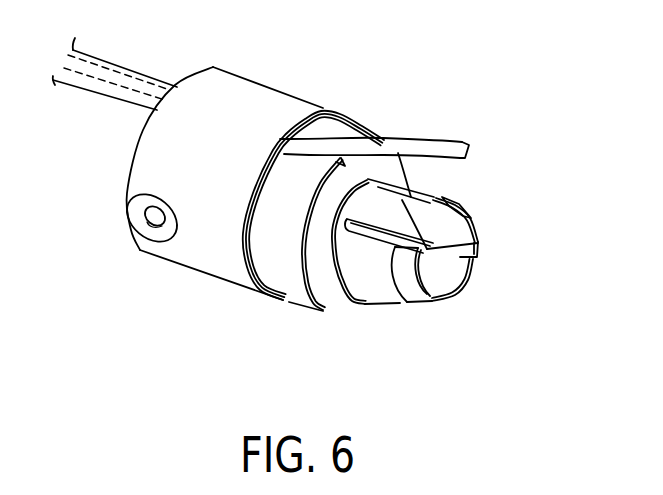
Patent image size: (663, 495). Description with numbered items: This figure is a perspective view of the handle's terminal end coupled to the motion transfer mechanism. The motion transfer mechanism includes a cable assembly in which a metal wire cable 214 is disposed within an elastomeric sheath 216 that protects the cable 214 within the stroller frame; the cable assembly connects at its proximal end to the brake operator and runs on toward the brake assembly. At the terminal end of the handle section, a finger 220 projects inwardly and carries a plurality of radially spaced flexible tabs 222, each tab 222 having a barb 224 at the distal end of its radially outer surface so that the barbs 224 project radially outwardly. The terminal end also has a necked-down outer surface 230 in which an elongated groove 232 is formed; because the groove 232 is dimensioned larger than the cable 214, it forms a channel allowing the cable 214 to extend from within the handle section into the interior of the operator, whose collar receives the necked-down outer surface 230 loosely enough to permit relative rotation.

The cable 214 is at (107, 83).
The sheath 216 is at (90, 53).
The finger 220 is at (456, 309).
The flexible tabs 222 is at (412, 192).
The barb 224 is at (463, 212).
The necked-down outer surface 230 is at (298, 290).
The elongated groove 232 is at (380, 148).